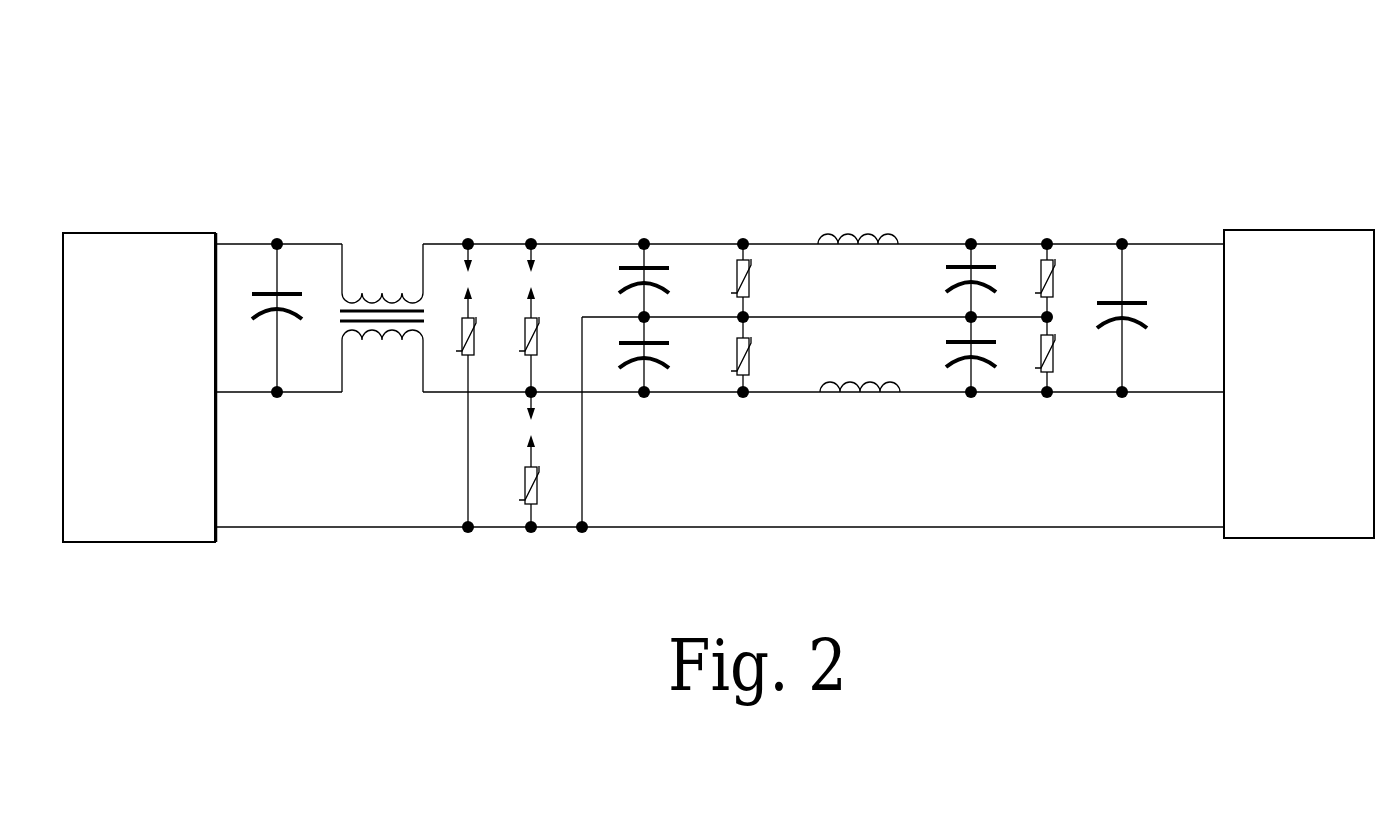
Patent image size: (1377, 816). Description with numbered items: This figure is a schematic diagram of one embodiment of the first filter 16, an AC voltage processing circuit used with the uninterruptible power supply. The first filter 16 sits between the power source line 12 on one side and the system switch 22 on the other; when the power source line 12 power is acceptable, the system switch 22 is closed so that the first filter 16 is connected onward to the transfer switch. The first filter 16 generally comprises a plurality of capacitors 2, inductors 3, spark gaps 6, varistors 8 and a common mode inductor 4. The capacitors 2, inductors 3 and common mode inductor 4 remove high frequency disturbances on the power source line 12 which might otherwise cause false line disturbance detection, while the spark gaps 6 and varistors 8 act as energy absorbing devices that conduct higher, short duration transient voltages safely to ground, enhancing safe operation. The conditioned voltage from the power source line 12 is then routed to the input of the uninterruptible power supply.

The power source line 12 is at (127, 233).
The system switch 22 is at (1325, 230).
The first filter 16 is at (1027, 136).
The common mode inductor 4 is at (367, 290).
The capacitors 2 is at (280, 316).
The inductors 3 is at (845, 234).
The spark gaps 6 is at (530, 280).
The varistors 8 is at (476, 352).